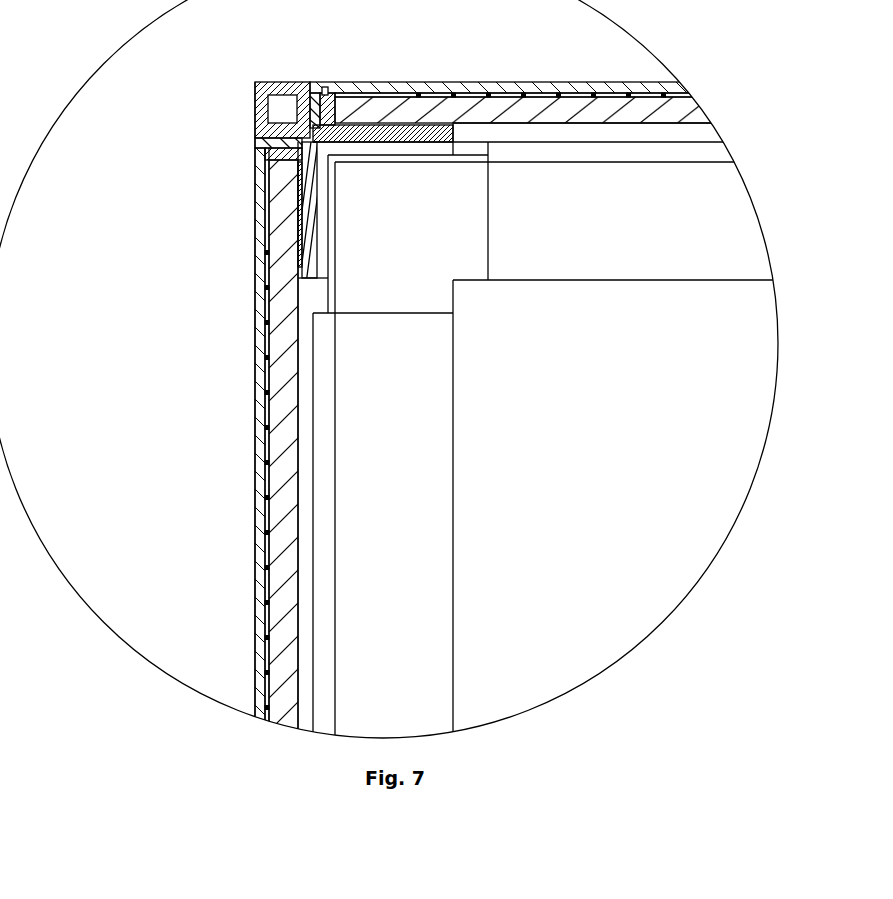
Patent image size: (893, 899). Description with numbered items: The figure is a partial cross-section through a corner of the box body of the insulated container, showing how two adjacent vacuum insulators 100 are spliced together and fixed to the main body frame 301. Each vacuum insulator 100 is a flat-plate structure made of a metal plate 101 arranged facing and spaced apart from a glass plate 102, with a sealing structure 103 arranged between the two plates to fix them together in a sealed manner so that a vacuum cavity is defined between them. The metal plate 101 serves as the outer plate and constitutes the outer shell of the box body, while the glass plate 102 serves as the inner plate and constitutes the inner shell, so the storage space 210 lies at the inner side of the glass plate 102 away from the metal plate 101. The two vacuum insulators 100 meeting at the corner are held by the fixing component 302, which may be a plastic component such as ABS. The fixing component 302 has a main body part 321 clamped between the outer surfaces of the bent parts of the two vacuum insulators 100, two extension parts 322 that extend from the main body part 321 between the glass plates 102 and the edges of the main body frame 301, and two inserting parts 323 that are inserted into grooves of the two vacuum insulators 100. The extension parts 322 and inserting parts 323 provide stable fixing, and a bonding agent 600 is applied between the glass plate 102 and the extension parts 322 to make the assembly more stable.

The vacuum insulator 100 is at (487, 79).
The metal plate 101 is at (548, 100).
The glass plate 102 is at (562, 117).
The sealing structure 103 is at (367, 92).
The storage space 210 is at (735, 475).
The main body frame 301 is at (633, 258).
The fixing component 302 is at (256, 76).
The main body part 321 is at (266, 104).
The extension part 322 is at (387, 132).
The inserting part 323 is at (332, 103).
The bonding agent 600 is at (298, 227).